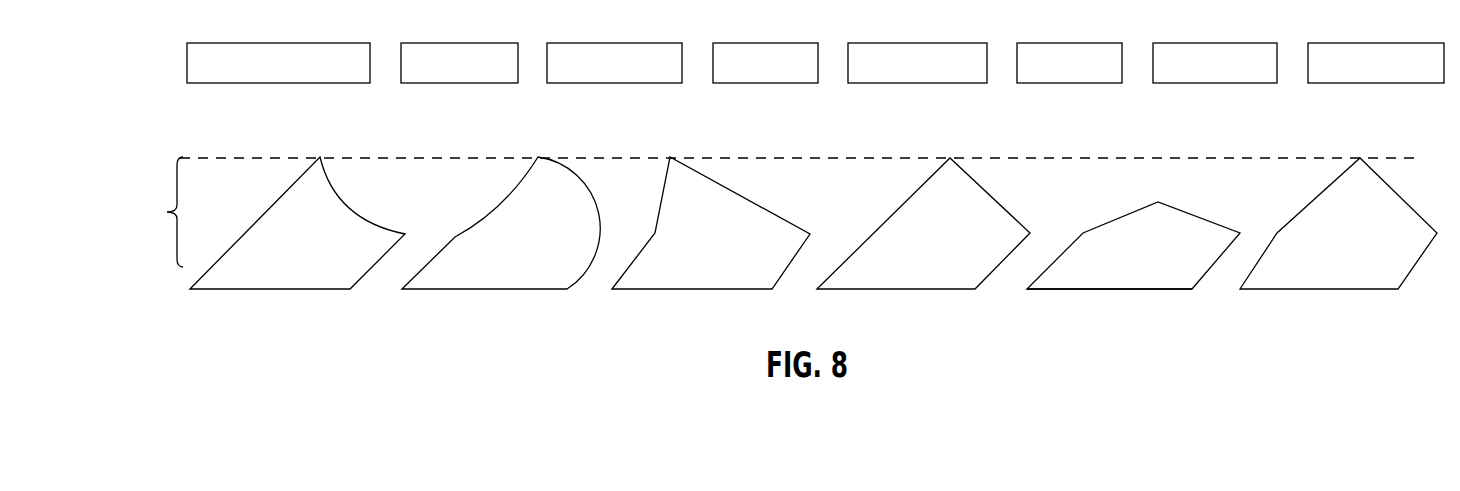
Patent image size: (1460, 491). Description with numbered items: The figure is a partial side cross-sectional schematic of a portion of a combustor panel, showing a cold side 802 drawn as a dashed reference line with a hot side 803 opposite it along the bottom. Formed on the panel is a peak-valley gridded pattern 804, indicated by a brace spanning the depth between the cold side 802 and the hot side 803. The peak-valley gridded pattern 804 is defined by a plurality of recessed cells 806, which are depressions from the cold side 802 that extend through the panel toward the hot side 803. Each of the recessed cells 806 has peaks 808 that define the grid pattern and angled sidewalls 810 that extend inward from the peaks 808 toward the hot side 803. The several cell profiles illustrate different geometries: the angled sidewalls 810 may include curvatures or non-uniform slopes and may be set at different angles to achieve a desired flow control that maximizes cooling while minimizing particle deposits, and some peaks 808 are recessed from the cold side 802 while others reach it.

The cold side 802 is at (1415, 155).
The hot side 803 is at (1082, 290).
The peak-valley gridded pattern 804 is at (167, 212).
The recessed cells 806 is at (1273, 184).
The peaks 808 is at (320, 157).
The angled sidewalls 810 is at (337, 190).